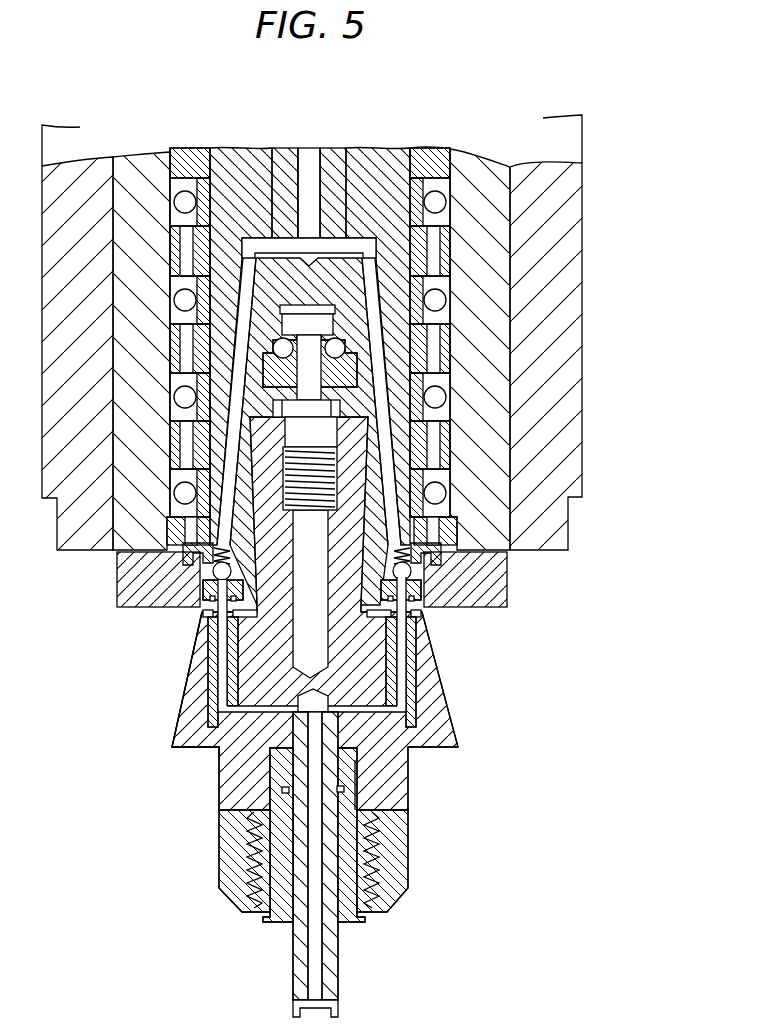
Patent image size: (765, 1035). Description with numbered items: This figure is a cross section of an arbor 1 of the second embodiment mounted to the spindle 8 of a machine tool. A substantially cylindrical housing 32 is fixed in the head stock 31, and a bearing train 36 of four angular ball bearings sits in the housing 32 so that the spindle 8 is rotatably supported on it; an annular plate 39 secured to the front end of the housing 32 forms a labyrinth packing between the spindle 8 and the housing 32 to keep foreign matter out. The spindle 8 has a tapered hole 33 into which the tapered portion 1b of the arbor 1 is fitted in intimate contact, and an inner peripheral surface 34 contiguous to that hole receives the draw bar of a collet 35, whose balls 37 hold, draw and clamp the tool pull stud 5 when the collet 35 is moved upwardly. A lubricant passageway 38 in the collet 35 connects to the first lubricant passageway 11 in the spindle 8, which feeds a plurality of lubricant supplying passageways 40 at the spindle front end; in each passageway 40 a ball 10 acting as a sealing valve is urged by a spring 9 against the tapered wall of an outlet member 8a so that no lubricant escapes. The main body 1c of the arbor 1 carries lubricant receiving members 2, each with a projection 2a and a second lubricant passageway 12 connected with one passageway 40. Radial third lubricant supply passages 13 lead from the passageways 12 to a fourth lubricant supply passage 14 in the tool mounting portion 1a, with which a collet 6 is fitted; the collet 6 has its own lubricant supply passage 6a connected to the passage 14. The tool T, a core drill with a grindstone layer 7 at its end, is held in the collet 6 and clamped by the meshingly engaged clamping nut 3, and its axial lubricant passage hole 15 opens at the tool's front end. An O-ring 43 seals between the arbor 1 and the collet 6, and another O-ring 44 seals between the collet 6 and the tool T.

The arbor 1 is at (448, 725).
The tool mounting portion 1a is at (233, 748).
The tapered portion 1b is at (345, 462).
The main body 1c is at (188, 710).
The lubricant receiving member 2 is at (413, 673).
The projection 2a is at (418, 585).
The clamping nut 3 is at (397, 857).
The tool pull stud 5 is at (275, 230).
The collet 6 is at (278, 842).
The lubricant supply passage 6a is at (353, 783).
The grindstone layer 7 is at (300, 1012).
The spindle 8 is at (393, 162).
The outlet member 8a is at (430, 562).
The spring 9 is at (405, 560).
The ball 10 is at (412, 572).
The first lubricant passageway 11 is at (375, 303).
The second lubricant passageway 12 is at (225, 667).
The third lubricant supply passage 13 is at (362, 735).
The fourth lubricant supply passage 14 is at (345, 789).
The lubricant passage hole 15 is at (317, 972).
The head stock 31 is at (568, 315).
The housing 32 is at (500, 340).
The tapered hole 33 is at (117, 570).
The inner peripheral surface 34 is at (333, 273).
The collet 35 is at (293, 262).
The bearing train 36 is at (432, 297).
The balls 37 is at (345, 327).
The lubricant passageway 38 is at (302, 157).
The annular plate 39 is at (493, 555).
The lubricant supplying passageway 40 is at (212, 548).
The O-ring 43 is at (300, 730).
The O-ring 44 is at (284, 790).
The tool T is at (300, 948).